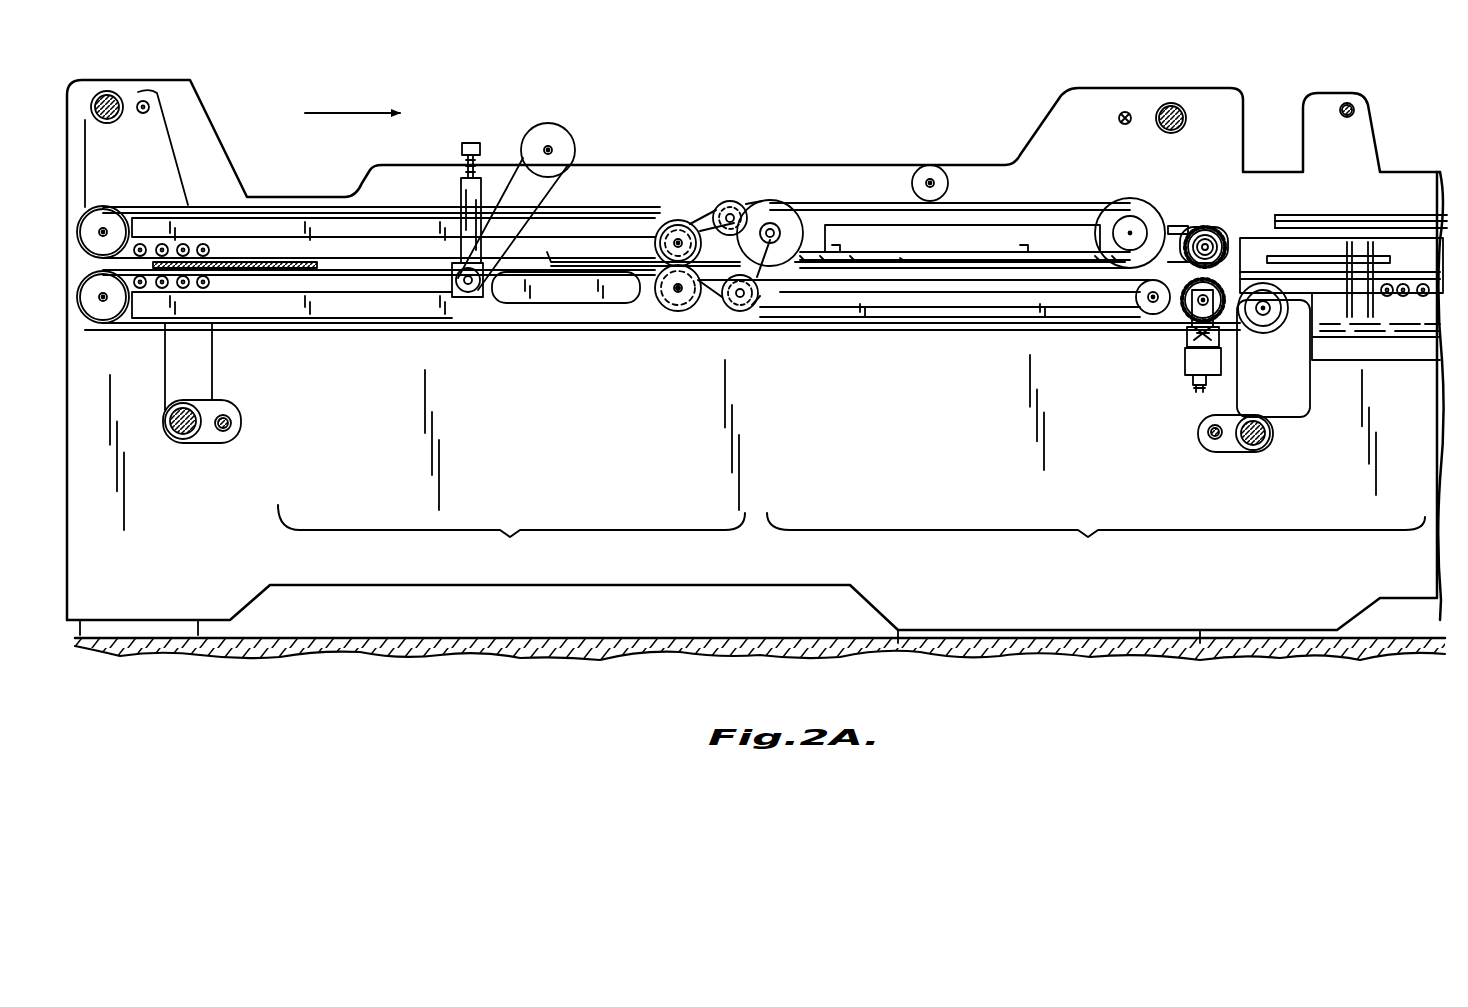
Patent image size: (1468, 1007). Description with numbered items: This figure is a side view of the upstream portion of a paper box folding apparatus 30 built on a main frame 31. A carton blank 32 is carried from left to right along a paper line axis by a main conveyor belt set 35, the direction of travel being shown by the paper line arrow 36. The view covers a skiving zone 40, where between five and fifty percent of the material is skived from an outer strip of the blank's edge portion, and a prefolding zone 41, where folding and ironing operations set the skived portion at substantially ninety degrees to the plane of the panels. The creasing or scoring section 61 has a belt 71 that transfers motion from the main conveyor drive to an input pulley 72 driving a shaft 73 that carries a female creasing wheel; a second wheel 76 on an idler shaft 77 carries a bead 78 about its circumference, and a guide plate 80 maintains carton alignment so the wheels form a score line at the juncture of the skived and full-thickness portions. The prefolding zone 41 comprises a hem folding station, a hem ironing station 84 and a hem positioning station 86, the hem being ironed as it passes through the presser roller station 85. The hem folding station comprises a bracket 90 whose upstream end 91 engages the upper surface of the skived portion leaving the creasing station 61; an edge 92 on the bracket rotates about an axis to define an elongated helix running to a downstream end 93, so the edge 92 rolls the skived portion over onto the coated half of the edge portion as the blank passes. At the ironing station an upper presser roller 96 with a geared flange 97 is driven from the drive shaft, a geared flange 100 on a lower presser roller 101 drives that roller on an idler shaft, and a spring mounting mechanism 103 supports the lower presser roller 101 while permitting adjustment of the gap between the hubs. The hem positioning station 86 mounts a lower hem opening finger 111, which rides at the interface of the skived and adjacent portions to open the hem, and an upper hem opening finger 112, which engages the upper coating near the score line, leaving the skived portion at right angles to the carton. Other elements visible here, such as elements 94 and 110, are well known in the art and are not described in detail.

The paper box folding apparatus 30 is at (942, 104).
The main frame 31 is at (1200, 93).
The carton blank 32 is at (272, 265).
The main conveyor belt set 35 is at (220, 207).
The paper line arrow 36 is at (358, 110).
The skiving zone 40 is at (511, 536).
The prefolding zone 41 is at (1096, 541).
The creasing or scoring section 61 is at (742, 345).
The belt 71 is at (1174, 227).
The input pulley 72 is at (690, 225).
The shaft 73 is at (665, 280).
The second wheel 76 is at (679, 292).
The idler shaft 77 is at (687, 302).
The bead 78 is at (672, 305).
The guide plate 80 is at (603, 262).
The hem ironing station 84 is at (990, 380).
The presser roller station 85 is at (1225, 456).
The hem positioning station 86 is at (1403, 432).
The bracket 90 is at (985, 253).
The upstream end 91 is at (795, 264).
The edge 92 is at (932, 262).
The downstream end 93 is at (1128, 270).
The upper belt 94 is at (838, 200).
The upper presser roller 96 is at (1216, 228).
The geared flange 97 is at (1225, 235).
The geared flange 100 is at (1185, 318).
The lower presser roller 101 is at (1183, 330).
The spring mounting mechanism 103 is at (1190, 365).
The roller support 110 is at (1370, 330).
The lower hem opening finger 111 is at (1400, 272).
The upper hem opening finger 112 is at (1362, 257).